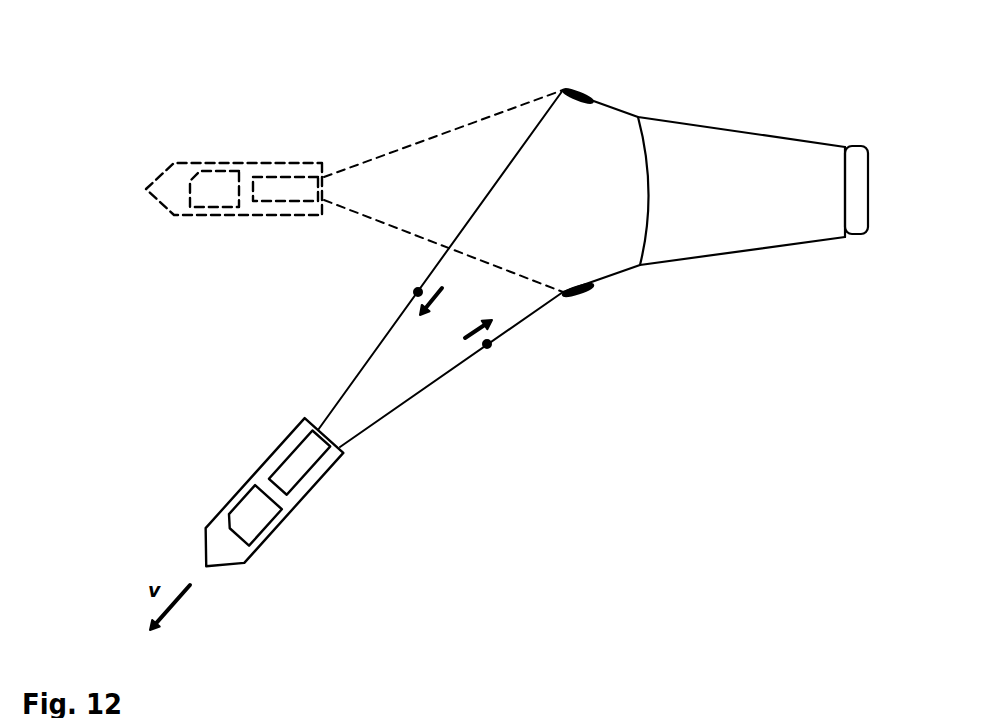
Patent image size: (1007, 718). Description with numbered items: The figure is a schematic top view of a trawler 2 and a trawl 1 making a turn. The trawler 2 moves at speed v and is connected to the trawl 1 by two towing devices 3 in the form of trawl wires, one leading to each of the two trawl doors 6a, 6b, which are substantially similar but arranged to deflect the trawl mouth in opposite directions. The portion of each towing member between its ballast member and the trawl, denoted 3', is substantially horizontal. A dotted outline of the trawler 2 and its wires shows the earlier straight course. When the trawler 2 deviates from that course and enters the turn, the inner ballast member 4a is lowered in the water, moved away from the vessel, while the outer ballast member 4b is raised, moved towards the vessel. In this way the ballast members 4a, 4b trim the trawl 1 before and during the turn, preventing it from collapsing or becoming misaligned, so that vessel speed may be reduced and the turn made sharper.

The trawl 1 is at (740, 125).
The trawler 2 is at (229, 500).
The towing device 3 is at (409, 302).
The portion of the towing member 3' is at (458, 245).
The inner ballast member 4a is at (484, 351).
The outer ballast member 4b is at (412, 294).
The trawl door 6a is at (592, 295).
The trawl door 6b is at (584, 91).